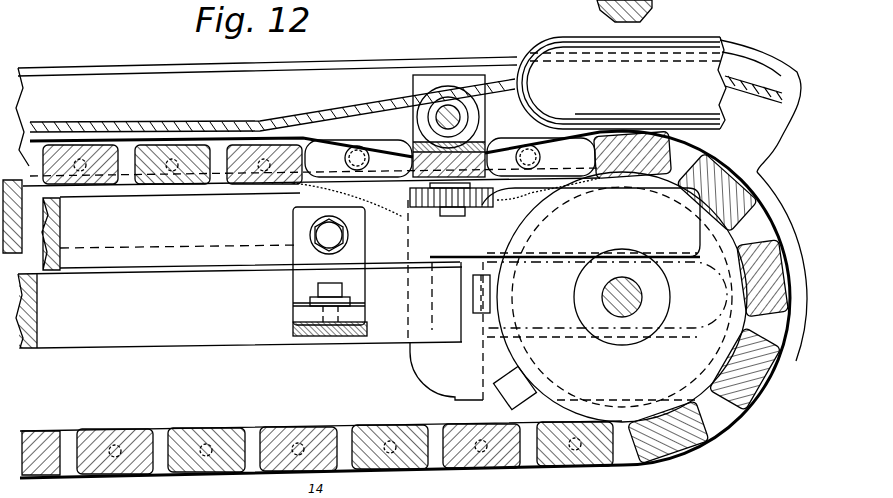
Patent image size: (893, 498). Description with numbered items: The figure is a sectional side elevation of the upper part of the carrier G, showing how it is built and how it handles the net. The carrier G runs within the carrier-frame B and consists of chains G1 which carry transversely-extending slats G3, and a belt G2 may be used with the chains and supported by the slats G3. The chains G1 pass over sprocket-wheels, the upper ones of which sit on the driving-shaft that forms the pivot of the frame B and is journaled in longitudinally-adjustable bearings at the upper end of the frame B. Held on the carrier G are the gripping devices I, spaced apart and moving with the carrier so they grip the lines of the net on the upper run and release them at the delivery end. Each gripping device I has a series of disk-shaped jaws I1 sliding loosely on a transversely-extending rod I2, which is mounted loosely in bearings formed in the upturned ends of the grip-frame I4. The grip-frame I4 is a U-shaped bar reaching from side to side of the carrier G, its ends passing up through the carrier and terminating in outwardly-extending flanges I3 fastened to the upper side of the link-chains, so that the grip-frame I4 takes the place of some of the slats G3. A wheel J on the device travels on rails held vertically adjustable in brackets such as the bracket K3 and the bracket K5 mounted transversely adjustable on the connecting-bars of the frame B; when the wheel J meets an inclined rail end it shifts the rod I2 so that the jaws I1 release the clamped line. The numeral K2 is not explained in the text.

The carrier-frame B is at (348, 70).
The carrier G is at (406, 85).
The chains G1 is at (305, 146).
The belt G2 is at (755, 215).
The slats G3 is at (160, 180).
The gripping device I is at (432, 126).
The jaws I1 is at (413, 97).
The rod I2 is at (449, 105).
The flanges I3 is at (609, 85).
The grip-frame I4 is at (300, 193).
The wheel J is at (496, 217).
The bracket K5 is at (300, 232).
The drive wheel K2 is at (610, 297).
The bracket K3 is at (603, 300).